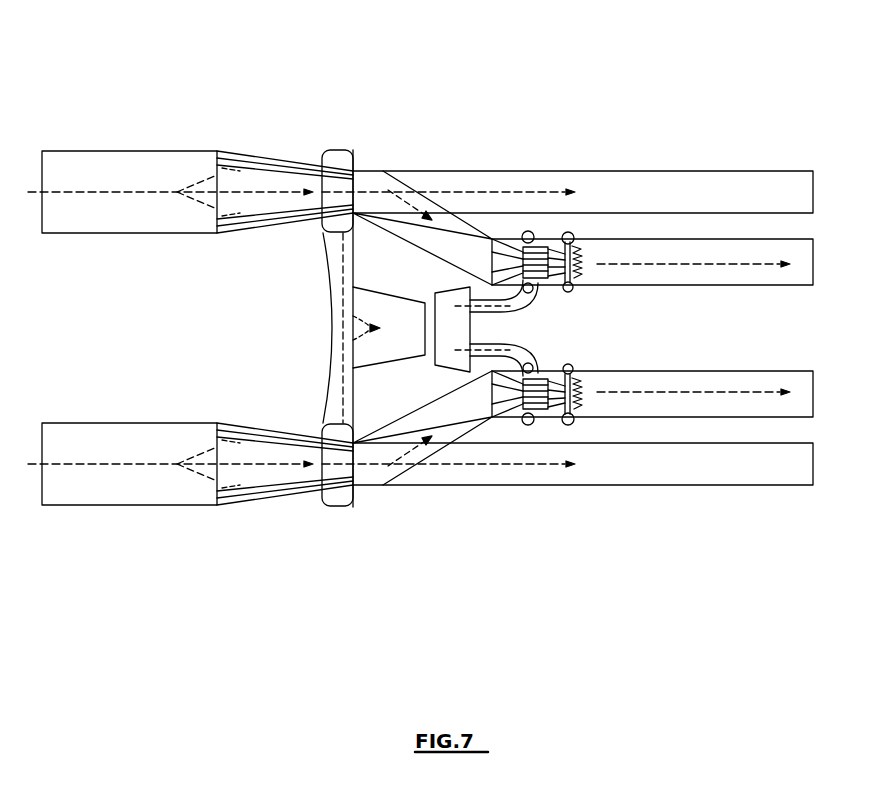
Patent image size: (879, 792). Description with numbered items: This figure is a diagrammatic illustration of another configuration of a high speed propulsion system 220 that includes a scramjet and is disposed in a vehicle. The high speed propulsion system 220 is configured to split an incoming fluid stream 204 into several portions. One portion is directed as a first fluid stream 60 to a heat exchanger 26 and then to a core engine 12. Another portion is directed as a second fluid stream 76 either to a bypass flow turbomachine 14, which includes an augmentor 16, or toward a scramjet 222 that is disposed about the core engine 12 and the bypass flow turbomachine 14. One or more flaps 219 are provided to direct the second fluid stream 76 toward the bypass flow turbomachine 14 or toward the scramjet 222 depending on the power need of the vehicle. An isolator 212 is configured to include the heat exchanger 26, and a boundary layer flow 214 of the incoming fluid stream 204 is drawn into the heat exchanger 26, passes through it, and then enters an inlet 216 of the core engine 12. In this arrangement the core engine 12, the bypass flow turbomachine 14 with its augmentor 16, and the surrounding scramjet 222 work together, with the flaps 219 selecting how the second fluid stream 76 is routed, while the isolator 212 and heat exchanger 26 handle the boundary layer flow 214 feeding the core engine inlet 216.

The high speed propulsion system 220 is at (694, 70).
The incoming fluid stream 204 is at (100, 197).
The first fluid stream 60 is at (272, 162).
The second fluid stream 76 is at (272, 194).
The core engine 12 is at (468, 148).
The scramjet 222 is at (525, 171).
The inlet 216 is at (322, 329).
The boundary layer flow 214 is at (272, 431).
The heat exchanger 26 is at (222, 425).
The isolator 212 is at (230, 506).
The flaps 219 is at (398, 487).
The augmentor 16 is at (573, 363).
The bypass flow turbomachine 14 is at (453, 500).